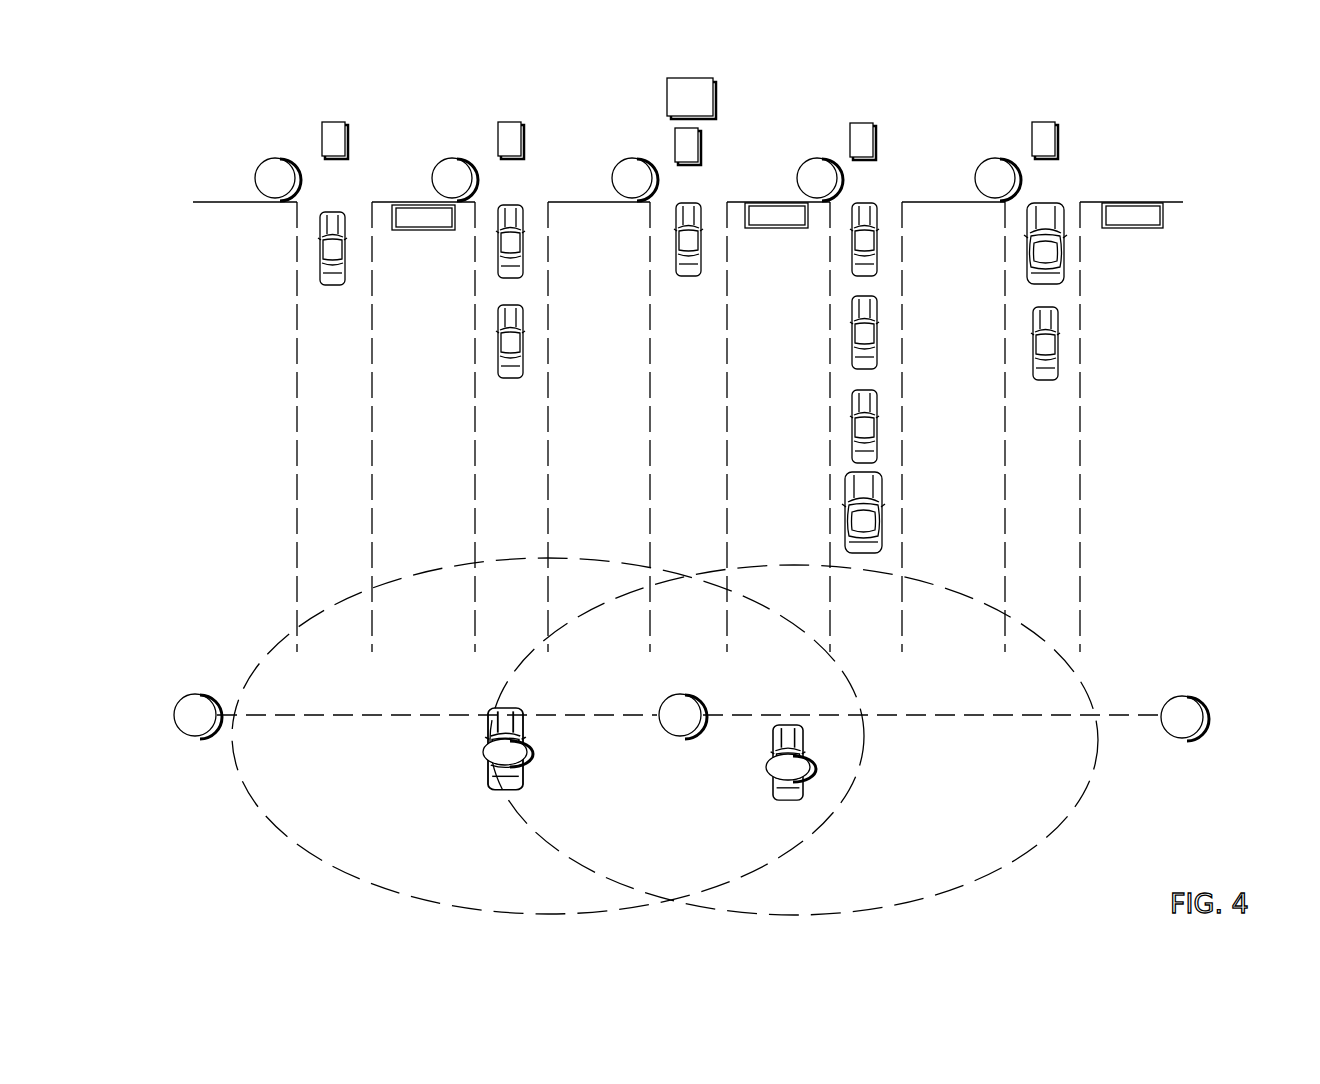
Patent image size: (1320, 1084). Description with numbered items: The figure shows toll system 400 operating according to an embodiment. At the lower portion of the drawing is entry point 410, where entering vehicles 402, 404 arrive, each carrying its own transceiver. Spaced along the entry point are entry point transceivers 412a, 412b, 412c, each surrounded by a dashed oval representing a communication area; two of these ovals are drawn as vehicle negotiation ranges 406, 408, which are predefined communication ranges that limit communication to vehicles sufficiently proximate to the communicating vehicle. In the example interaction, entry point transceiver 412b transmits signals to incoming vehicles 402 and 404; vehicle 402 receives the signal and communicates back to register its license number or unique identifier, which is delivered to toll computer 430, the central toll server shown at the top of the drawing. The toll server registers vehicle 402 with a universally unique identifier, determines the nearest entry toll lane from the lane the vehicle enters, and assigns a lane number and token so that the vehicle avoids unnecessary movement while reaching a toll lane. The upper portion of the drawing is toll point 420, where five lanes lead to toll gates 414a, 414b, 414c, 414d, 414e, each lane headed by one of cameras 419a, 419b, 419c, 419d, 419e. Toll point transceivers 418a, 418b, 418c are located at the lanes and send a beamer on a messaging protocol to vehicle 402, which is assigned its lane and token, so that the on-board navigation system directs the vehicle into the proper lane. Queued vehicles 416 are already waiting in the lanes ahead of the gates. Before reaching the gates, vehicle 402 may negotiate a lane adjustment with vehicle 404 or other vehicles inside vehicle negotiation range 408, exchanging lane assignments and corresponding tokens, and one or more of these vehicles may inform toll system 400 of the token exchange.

The toll system 400 is at (1170, 122).
The entering vehicle 402 is at (527, 745).
The entering vehicle 404 is at (807, 757).
The vehicle negotiation range 406 is at (287, 835).
The vehicle negotiation range 408 is at (1043, 840).
The entry point 410 is at (170, 708).
The entry point transceiver 412a is at (207, 738).
The entry point transceiver 412b is at (680, 738).
The entry point transceiver 412c is at (1183, 740).
The toll gate 414a is at (321, 140).
The toll gate 414b is at (497, 140).
The toll gate 414c is at (674, 142).
The toll gate 414d is at (849, 140).
The toll gate 414e is at (1031, 140).
The queued vehicles 416 is at (499, 326).
The toll point transceiver 418a is at (398, 232).
The toll point transceiver 418b is at (752, 230).
The toll point transceiver 418c is at (1105, 230).
The camera 419a is at (255, 178).
The camera 419b is at (432, 178).
The camera 419c is at (612, 178).
The camera 419d is at (797, 178).
The camera 419e is at (975, 178).
The toll point 420 is at (212, 206).
The toll computer 430 is at (708, 108).